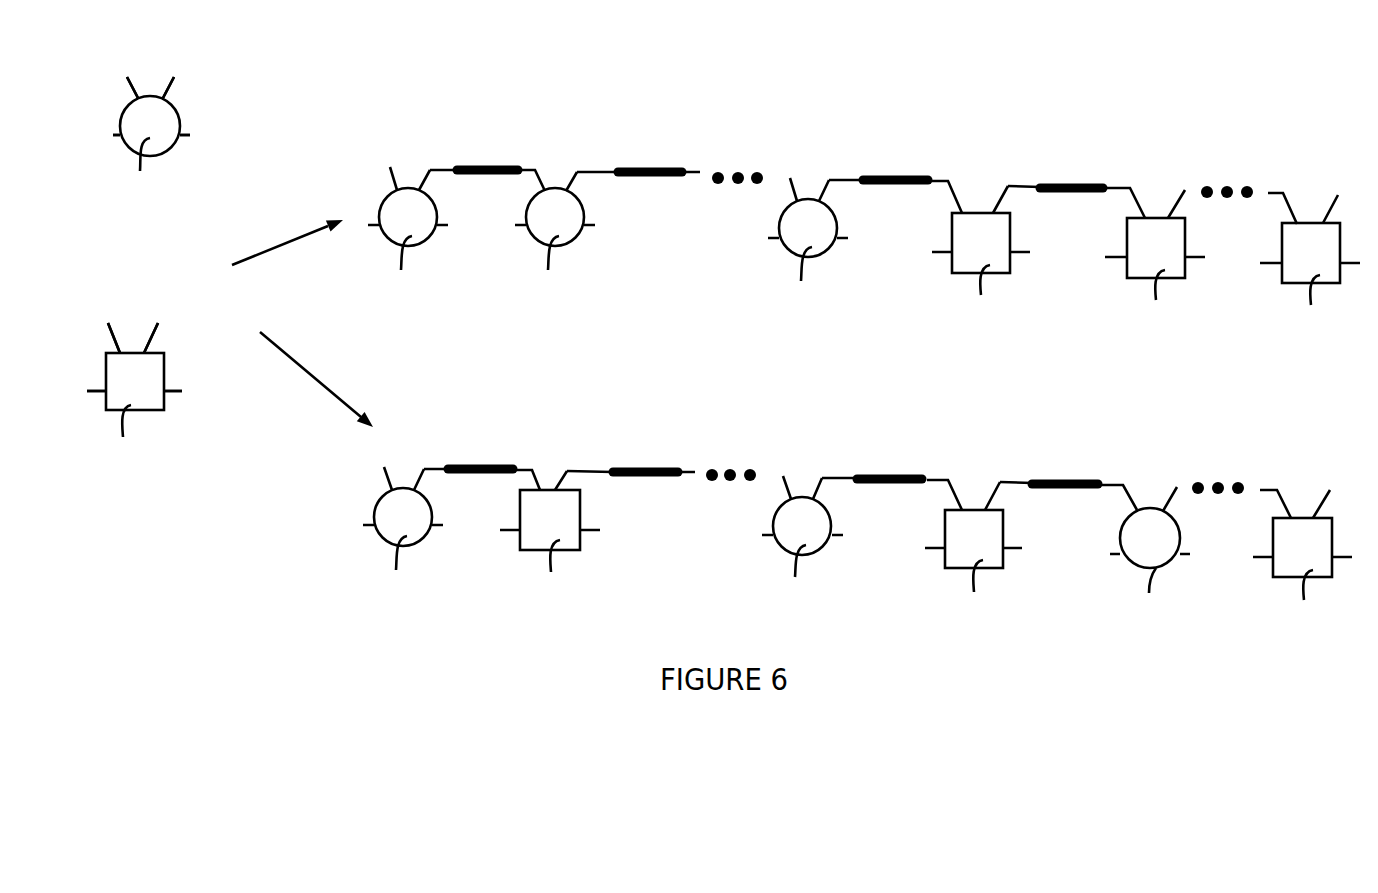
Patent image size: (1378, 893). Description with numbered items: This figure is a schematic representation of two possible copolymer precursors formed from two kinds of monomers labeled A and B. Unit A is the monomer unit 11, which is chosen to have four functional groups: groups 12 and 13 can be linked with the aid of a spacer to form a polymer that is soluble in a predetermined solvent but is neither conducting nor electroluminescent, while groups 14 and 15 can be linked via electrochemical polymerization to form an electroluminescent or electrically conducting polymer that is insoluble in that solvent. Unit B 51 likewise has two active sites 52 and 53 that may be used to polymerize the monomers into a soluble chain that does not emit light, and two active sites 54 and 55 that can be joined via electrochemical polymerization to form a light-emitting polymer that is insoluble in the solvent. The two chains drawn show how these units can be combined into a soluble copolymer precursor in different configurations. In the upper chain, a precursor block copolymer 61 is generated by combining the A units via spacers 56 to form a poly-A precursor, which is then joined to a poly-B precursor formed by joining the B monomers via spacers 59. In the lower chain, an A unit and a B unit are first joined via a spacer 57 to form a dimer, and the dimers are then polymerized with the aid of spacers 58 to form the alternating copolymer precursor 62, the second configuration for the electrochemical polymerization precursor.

The monomer unit 11 is at (651, 354).
The functional group 12 is at (129, 80).
The functional group 13 is at (171, 80).
The functional group 14 is at (113, 136).
The functional group 15 is at (190, 136).
The unit B 51 is at (723, 410).
The active site 52 is at (110, 325).
The active site 53 is at (161, 325).
The active site 54 is at (93, 392).
The active site 55 is at (178, 392).
The spacer 56 is at (468, 168).
The spacer 57 is at (462, 467).
The spacer 58 is at (629, 470).
The spacer 59 is at (888, 178).
The precursor block copolymer 61 is at (753, 78).
The alternating copolymer precursor 62 is at (785, 418).